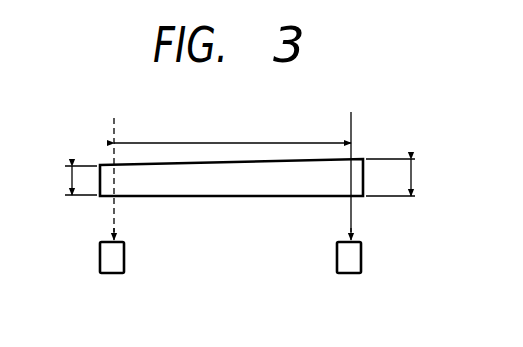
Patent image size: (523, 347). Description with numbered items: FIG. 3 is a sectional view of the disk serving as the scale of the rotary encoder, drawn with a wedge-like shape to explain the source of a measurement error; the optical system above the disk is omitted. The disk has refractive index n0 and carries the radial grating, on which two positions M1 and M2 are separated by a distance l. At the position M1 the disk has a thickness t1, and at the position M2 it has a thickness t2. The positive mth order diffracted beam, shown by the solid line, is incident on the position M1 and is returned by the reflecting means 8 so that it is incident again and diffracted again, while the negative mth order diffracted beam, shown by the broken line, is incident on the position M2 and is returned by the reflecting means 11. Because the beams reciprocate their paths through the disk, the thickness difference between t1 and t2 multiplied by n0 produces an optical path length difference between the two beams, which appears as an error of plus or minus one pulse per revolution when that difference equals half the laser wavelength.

The reflecting means 8 is at (361, 258).
The reflecting means 11 is at (124, 261).
The position M1 is at (352, 160).
The position M2 is at (113, 165).
The thickness of the disk at position M1 t1 is at (390, 177).
The thickness of the disk at position M2 t2 is at (67, 181).
The distance between positions M1 and M2 l is at (232, 128).
The refractive index of the disk n0 is at (231, 177).